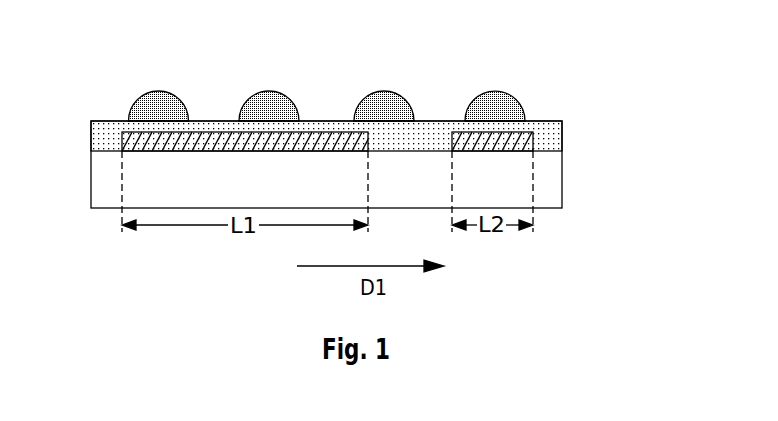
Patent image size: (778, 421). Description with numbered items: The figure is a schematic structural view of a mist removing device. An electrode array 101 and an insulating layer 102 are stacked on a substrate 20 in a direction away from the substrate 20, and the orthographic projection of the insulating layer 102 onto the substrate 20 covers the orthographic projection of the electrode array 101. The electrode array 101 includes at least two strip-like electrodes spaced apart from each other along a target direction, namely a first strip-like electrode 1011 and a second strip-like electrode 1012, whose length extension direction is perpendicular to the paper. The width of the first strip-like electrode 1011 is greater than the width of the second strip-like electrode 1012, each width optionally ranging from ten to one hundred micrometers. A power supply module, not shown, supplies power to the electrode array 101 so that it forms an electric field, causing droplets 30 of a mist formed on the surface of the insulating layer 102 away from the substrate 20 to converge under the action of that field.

The substrate 20 is at (568, 179).
The insulating layer 102 is at (568, 139).
The electrode array 101 is at (327, 78).
The first strip-like electrode 1011 is at (268, 122).
The second strip-like electrode 1012 is at (492, 122).
The droplets 30 is at (293, 81).